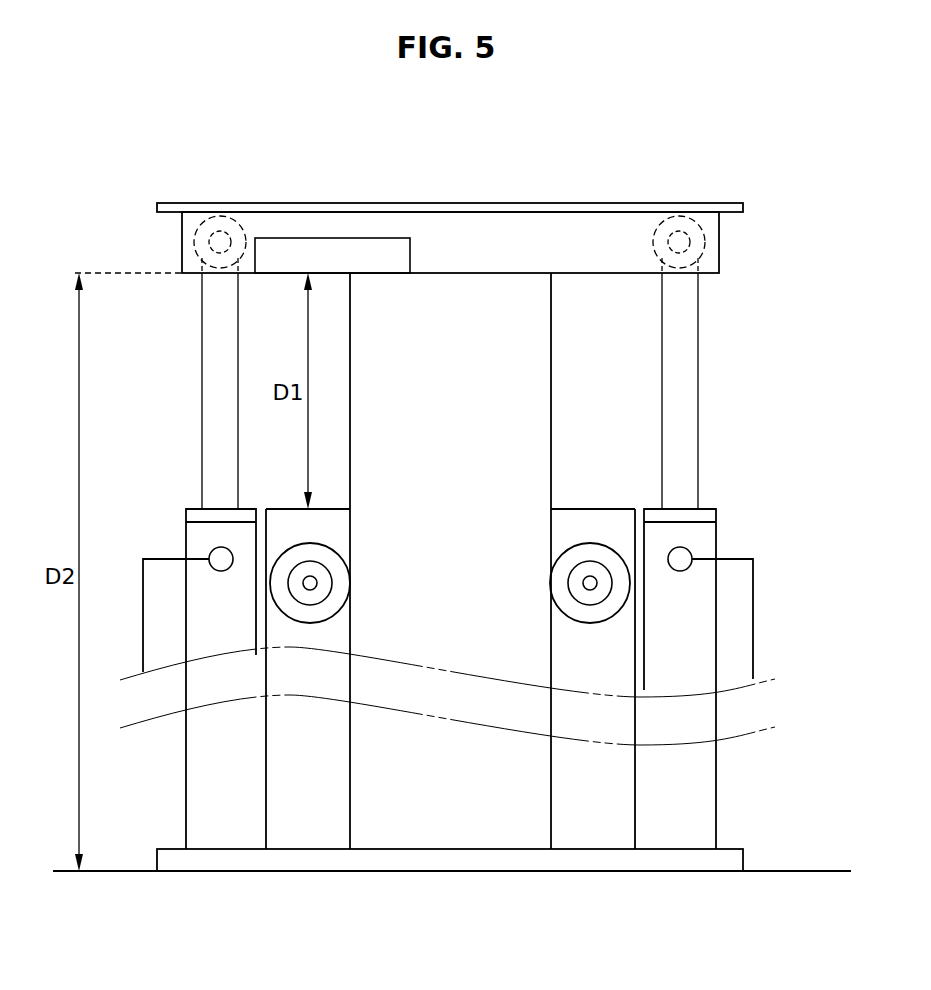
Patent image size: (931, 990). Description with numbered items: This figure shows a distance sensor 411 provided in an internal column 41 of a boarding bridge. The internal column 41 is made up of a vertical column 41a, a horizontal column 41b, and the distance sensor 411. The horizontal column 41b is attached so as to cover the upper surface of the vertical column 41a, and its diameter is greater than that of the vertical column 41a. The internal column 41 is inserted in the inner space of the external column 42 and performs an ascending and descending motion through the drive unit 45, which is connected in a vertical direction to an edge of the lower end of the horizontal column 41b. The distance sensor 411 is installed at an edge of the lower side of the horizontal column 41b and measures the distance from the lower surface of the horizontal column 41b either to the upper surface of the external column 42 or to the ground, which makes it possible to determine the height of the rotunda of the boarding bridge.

The internal column 41 is at (495, 165).
The vertical column 41a is at (546, 312).
The horizontal column 41b is at (502, 243).
The distance sensor 411 is at (308, 238).
The external column 42 is at (617, 525).
The drive unit 45 is at (193, 538).